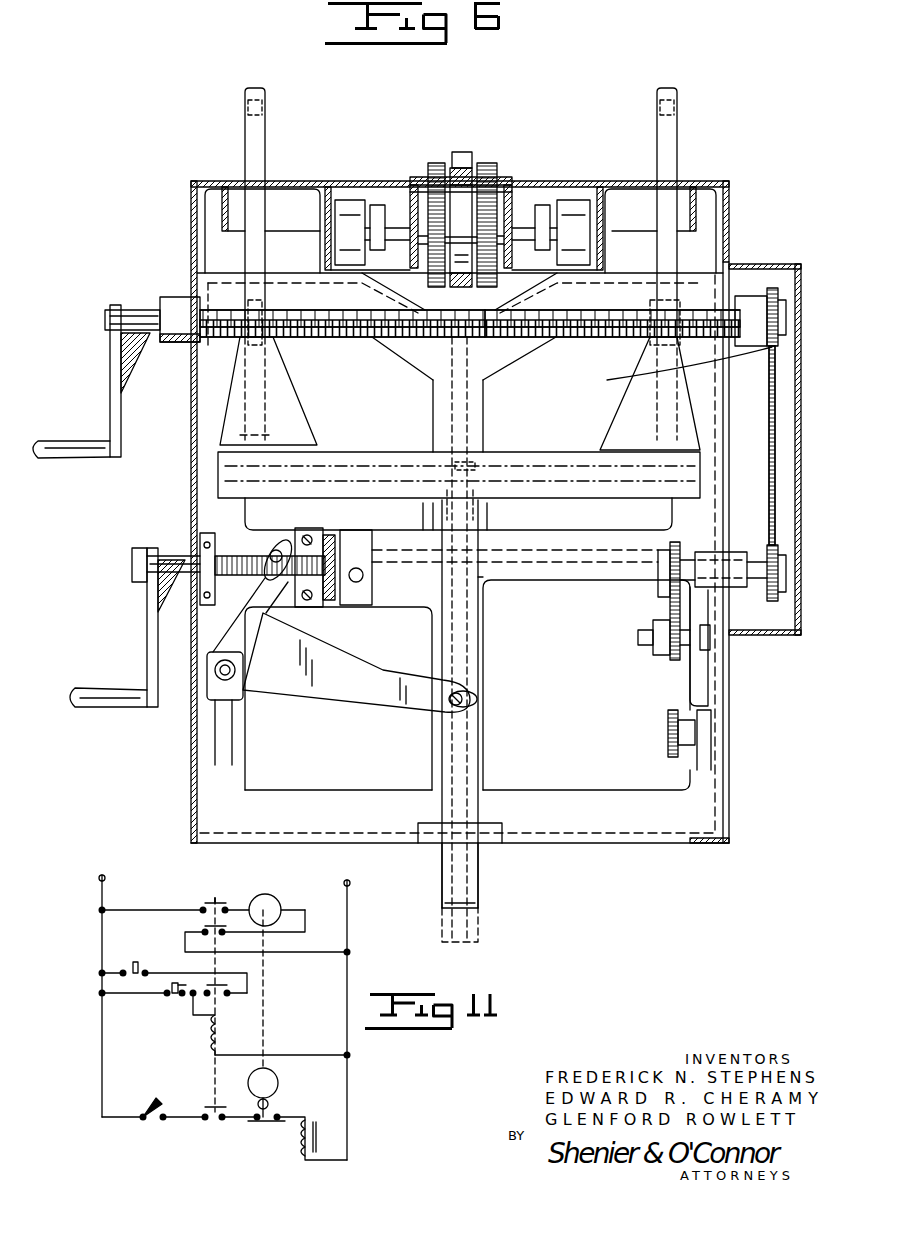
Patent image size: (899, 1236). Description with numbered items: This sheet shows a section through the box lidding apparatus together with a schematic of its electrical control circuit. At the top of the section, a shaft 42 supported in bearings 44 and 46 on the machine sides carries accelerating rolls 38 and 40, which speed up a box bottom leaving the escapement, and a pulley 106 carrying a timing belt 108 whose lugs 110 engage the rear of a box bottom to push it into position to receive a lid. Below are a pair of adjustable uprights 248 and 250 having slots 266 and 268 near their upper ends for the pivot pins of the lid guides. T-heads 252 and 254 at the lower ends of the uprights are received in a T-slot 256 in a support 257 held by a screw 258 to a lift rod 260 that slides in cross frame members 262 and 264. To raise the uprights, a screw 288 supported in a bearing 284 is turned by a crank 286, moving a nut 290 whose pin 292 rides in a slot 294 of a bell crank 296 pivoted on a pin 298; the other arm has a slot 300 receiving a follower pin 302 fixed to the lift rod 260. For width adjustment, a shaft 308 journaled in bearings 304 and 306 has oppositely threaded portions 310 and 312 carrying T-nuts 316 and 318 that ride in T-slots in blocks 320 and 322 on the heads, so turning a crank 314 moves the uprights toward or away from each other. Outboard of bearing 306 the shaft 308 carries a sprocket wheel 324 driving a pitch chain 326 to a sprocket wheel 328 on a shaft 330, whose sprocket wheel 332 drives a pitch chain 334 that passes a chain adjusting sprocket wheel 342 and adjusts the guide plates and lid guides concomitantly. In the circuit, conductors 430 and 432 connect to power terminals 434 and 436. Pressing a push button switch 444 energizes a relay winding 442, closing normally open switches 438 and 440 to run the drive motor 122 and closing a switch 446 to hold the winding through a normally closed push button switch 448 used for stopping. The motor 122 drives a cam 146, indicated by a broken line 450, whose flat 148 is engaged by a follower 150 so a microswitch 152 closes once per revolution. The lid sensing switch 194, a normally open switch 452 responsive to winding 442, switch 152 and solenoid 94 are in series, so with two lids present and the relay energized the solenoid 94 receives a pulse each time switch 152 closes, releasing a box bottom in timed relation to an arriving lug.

In FIG. 6, the accelerating roll 38 is at (493, 161).
In FIG. 6, the accelerating roll 40 is at (420, 184).
In FIG. 6, the shaft 42 is at (528, 217).
In FIG. 6, the bearing 44 is at (573, 210).
In FIG. 6, the bearing 46 is at (362, 200).
In FIG. 11, the solenoid 94 is at (320, 1143).
In FIG. 6, the pulley 106 is at (462, 284).
In FIG. 6, the timing belt 108 is at (470, 167).
In FIG. 6, the lug 110 is at (468, 160).
In FIG. 11, the drive motor 122 is at (300, 890).
In FIG. 11, the cam 146 is at (280, 1080).
In FIG. 11, the flat 148 is at (287, 1088).
In FIG. 11, the follower 150 is at (270, 1103).
In FIG. 11, the microswitch 152 is at (263, 1132).
In FIG. 11, the lid sensing switch 194 is at (153, 1125).
In FIG. 6, the adjustable upright 248 is at (268, 160).
In FIG. 6, the adjustable upright 250 is at (672, 160).
In FIG. 6, the T-head 252 is at (317, 467).
In FIG. 6, the T-head 254 is at (602, 477).
In FIG. 6, the T-slot 256 is at (363, 467).
In FIG. 6, the support 257 is at (468, 487).
In FIG. 6, the screw 258 is at (480, 463).
In FIG. 6, the lift rod 260 is at (483, 648).
In FIG. 6, the cross frame member 262 is at (550, 585).
In FIG. 6, the cross frame member 264 is at (585, 793).
In FIG. 6, the slot 266 is at (252, 112).
In FIG. 6, the slot 268 is at (675, 93).
In FIG. 6, the bearing 284 is at (203, 547).
In FIG. 6, the crank 286 is at (147, 612).
In FIG. 6, the screw 288 is at (245, 547).
In FIG. 6, the nut 290 is at (293, 612).
In FIG. 6, the pin 292 is at (275, 560).
In FIG. 6, the slot 294 is at (257, 612).
In FIG. 6, the bell crank 296 is at (363, 708).
In FIG. 6, the pin 298 is at (217, 687).
In FIG. 6, the slot 300 is at (485, 700).
In FIG. 6, the follower pin 302 is at (470, 690).
In FIG. 6, the bearing 304 is at (167, 352).
In FIG. 6, the bearing 306 is at (760, 292).
In FIG. 6, the shaft 308 is at (175, 300).
In FIG. 6, the threaded portion 310 is at (355, 312).
In FIG. 6, the threaded portion 312 is at (612, 314).
In FIG. 6, the crank 314 is at (112, 403).
In FIG. 6, the T-nut 316 is at (262, 312).
In FIG. 6, the T-nut 318 is at (675, 322).
In FIG. 6, the block 320 is at (290, 402).
In FIG. 6, the block 322 is at (648, 340).
In FIG. 6, the sprocket wheel 324 is at (780, 290).
In FIG. 6, the pitch chain 326 is at (607, 380).
In FIG. 6, the sprocket wheel 328 is at (770, 603).
In FIG. 6, the shaft 330 is at (710, 552).
In FIG. 6, the sprocket wheel 332 is at (665, 568).
In FIG. 6, the pitch chain 334 is at (660, 600).
In FIG. 6, the chain adjusting sprocket wheel 342 is at (670, 715).
In FIG. 11, the conductor 430 is at (98, 940).
In FIG. 11, the conductor 432 is at (348, 936).
In FIG. 11, the terminal 434 is at (99, 880).
In FIG. 11, the terminal 436 is at (352, 884).
In FIG. 11, the normally open switch 438 is at (230, 898).
In FIG. 11, the normally open switch 440 is at (203, 918).
In FIG. 11, the relay winding 442 is at (210, 1038).
In FIG. 11, the push button switch 444 is at (163, 993).
In FIG. 11, the switch 446 is at (227, 987).
In FIG. 11, the normally closed push button switch 448 is at (143, 968).
In FIG. 11, the broken line 450 is at (265, 1040).
In FIG. 11, the normally open switch 452 is at (207, 1105).